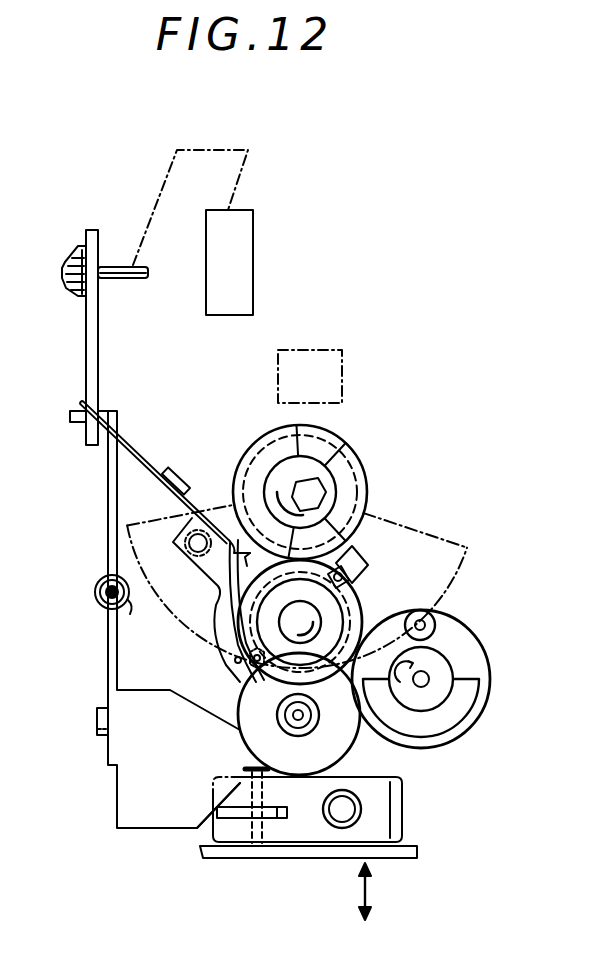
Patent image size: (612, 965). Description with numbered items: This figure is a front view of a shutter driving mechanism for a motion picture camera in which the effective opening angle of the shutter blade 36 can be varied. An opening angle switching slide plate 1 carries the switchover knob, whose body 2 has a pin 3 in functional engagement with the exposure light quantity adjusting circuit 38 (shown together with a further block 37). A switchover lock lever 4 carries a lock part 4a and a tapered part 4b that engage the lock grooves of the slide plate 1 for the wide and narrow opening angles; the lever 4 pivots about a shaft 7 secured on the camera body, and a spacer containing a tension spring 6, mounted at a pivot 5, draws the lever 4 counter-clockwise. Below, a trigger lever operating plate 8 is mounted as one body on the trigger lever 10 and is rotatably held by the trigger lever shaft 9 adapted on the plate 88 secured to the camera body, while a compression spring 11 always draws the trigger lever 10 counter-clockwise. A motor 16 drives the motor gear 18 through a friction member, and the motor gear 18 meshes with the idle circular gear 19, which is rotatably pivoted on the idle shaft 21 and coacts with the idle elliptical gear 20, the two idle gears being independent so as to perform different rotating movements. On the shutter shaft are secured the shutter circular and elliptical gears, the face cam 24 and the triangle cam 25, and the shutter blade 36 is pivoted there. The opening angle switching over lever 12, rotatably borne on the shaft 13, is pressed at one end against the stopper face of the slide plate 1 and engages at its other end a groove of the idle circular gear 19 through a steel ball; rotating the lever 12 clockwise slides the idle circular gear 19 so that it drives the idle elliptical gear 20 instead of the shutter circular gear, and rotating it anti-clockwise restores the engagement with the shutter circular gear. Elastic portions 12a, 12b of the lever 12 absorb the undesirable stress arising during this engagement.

The opening angle switching slide plate 1 is at (91, 329).
The knob 2 is at (62, 271).
The pin 3 is at (120, 266).
The switchover lock lever 4 is at (108, 540).
The lock part 4a is at (70, 416).
The tapered part 4b is at (205, 828).
The roller 5 is at (95, 592).
The tension spring 6 is at (130, 606).
The shaft 7 is at (95, 723).
The trigger lever operating plate 8 is at (237, 818).
The trigger lever shaft 9 is at (260, 857).
The trigger lever 10 is at (310, 833).
The compression spring 11 is at (353, 823).
The opening angle switching over lever 12 is at (137, 458).
The elastic portion 12a is at (367, 563).
The elastic portion 12b is at (232, 670).
The shaft 13 is at (176, 468).
The motor 16 is at (353, 745).
The motor gear 18 is at (313, 723).
The idle circular gear 19 is at (348, 636).
The idle elliptical gear 20 is at (433, 613).
The idle shaft 21 is at (290, 617).
The face cam 24 is at (332, 443).
The triangle cam 25 is at (320, 490).
The shutter blade 36 is at (432, 537).
The box 37 is at (344, 397).
The exposure light quantity adjusting circuit 38 is at (250, 283).
The plate 88 is at (348, 857).